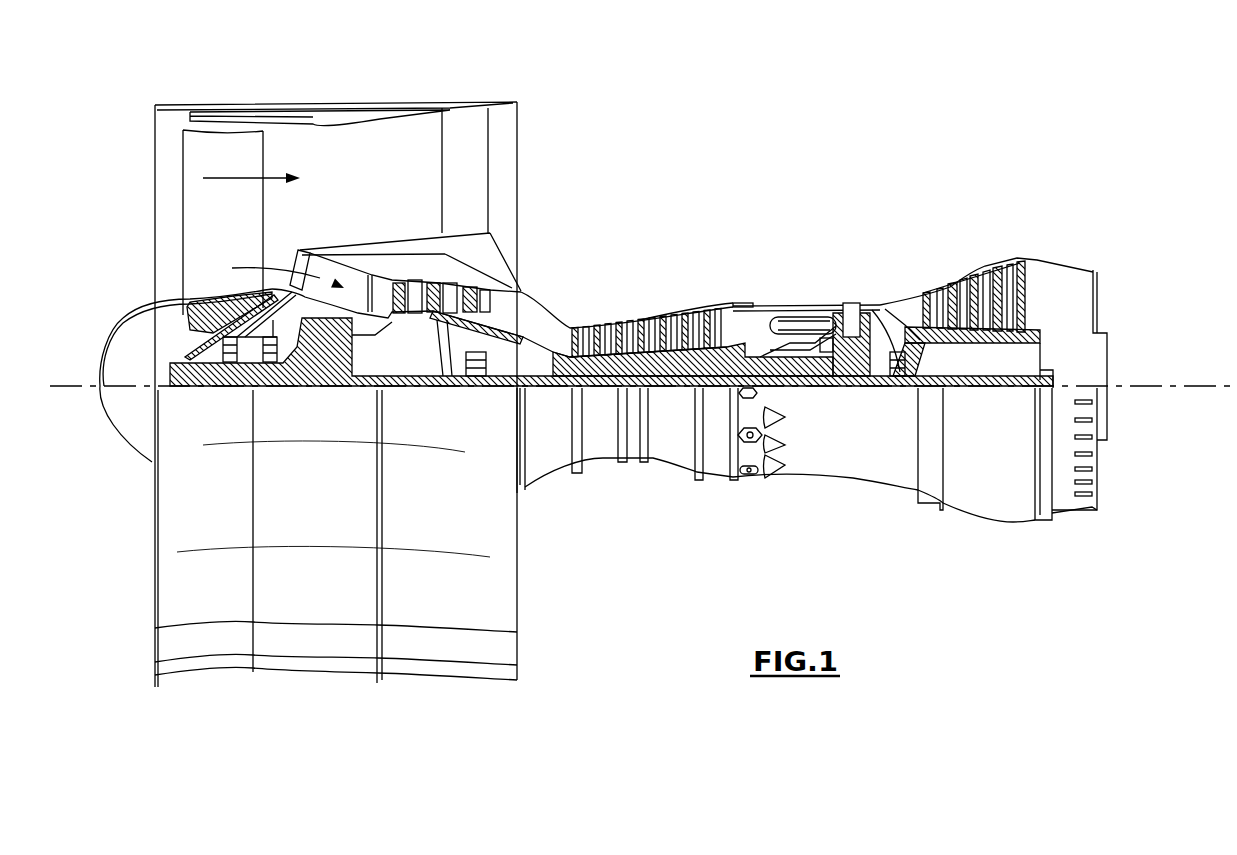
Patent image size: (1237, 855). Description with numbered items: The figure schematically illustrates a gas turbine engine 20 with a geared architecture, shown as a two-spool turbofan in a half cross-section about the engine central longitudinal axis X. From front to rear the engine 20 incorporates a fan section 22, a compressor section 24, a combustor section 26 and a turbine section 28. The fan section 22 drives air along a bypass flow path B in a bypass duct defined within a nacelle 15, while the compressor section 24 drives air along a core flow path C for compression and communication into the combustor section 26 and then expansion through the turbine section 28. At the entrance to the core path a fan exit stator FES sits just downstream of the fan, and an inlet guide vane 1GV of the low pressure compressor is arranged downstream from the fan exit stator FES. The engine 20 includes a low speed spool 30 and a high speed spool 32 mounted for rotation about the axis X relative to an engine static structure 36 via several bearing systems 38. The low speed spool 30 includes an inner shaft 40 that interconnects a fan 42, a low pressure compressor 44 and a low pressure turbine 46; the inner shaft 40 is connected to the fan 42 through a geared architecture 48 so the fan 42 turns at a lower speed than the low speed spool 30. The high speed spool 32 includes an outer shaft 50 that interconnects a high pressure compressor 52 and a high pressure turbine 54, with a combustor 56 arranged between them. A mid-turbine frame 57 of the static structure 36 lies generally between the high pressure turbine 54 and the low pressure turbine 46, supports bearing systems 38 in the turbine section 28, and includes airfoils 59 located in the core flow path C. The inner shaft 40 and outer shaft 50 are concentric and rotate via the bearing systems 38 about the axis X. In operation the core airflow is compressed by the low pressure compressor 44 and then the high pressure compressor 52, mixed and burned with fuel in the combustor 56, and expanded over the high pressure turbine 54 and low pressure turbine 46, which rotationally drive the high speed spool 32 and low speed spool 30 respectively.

The nacelle 15 is at (337, 110).
The gas turbine engine 20 is at (800, 150).
The fan section 22 is at (263, 95).
The compressor section 24 is at (575, 288).
The combustor section 26 is at (793, 278).
The turbine section 28 is at (940, 242).
The low speed spool 30 is at (673, 395).
The high speed spool 32 is at (712, 353).
The engine static structure 36 is at (715, 482).
The bearing systems 38 is at (477, 372).
The inner shaft 40 is at (535, 388).
The fan 42 is at (237, 234).
The low pressure compressor 44 is at (437, 297).
The low pressure turbine 46 is at (983, 280).
The geared architecture 48 is at (343, 375).
The outer shaft 50 is at (793, 372).
The high pressure compressor 52 is at (647, 357).
The high pressure turbine 54 is at (853, 305).
The combustor 56 is at (788, 330).
The mid-turbine frame 57 is at (903, 285).
The airfoils 59 is at (893, 325).
The bypass flow path B is at (238, 177).
The core flow path C is at (281, 272).
The fan exit stator FES is at (307, 250).
The inlet guide vane 1GV is at (380, 277).
The engine central longitudinal axis X is at (1190, 386).